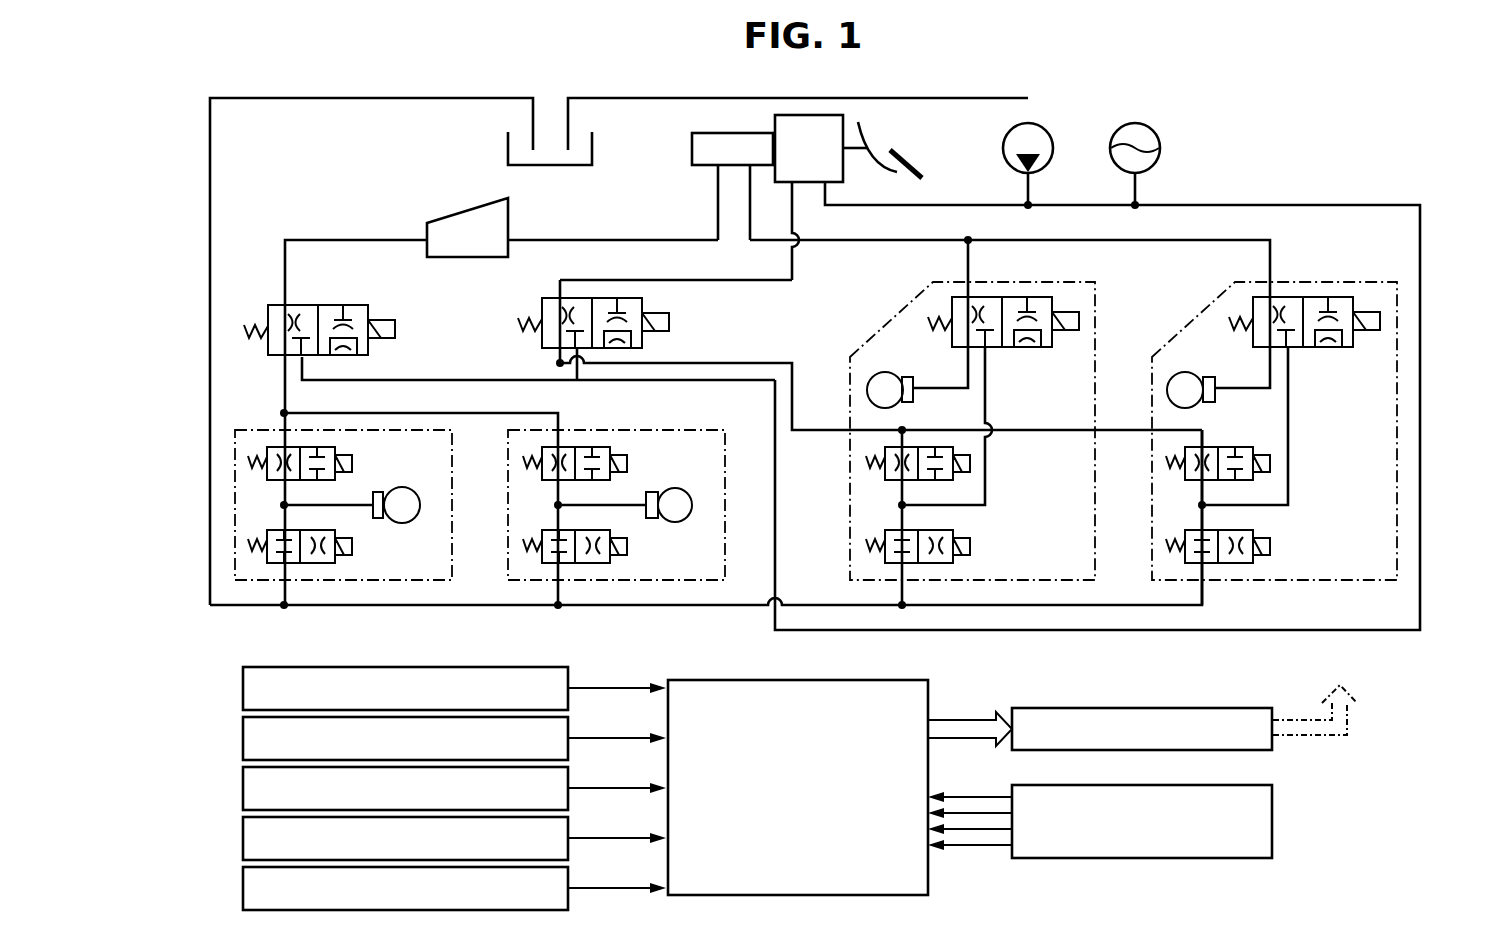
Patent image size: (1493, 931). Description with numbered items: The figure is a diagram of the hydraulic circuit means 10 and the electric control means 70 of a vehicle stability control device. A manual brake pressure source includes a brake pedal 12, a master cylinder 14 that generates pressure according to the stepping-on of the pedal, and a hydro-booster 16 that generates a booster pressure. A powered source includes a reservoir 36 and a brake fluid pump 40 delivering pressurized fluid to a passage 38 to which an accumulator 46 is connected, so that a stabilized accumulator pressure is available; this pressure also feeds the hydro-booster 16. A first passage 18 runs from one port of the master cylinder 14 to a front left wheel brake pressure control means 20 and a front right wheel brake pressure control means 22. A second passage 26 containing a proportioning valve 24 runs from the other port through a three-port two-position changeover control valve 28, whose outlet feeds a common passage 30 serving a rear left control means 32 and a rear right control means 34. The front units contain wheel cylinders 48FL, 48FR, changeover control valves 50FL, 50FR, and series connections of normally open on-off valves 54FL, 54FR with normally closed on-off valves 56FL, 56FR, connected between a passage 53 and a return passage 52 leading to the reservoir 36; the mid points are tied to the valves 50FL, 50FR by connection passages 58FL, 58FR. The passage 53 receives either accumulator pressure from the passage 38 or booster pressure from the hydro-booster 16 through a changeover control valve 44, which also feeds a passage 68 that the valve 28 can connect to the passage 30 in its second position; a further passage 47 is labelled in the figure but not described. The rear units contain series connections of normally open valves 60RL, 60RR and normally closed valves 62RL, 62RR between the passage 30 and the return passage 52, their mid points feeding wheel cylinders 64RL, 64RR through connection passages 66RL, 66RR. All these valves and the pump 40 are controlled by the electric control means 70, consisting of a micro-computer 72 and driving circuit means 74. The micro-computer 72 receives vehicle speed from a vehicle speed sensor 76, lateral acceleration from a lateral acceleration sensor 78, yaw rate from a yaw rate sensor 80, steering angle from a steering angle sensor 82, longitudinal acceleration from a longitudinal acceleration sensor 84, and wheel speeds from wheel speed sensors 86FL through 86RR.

The hydraulic circuit means 10 is at (195, 160).
The brake pedal 12 is at (912, 158).
The master cylinder 14 is at (710, 137).
The hydro-booster 16 is at (809, 197).
The first passage 18 is at (825, 240).
The front left wheel brake pressure control means 20 is at (905, 315).
The front right wheel brake pressure control means 22 is at (1200, 318).
The proportioning valve 24 is at (430, 216).
The second passage 26 is at (312, 240).
The changeover type electromagnetic control valve 28 is at (302, 305).
The common passage 30 is at (288, 400).
The rear left wheel brake pressure control means 32 is at (253, 428).
The rear right wheel brake pressure control means 34 is at (588, 583).
The reservoir 36 is at (508, 150).
The passage 38 is at (1300, 205).
The brake fluid pump 40 is at (1052, 155).
The changeover type electronic control valve 44 is at (590, 298).
The accumulator 46 is at (1160, 148).
The conduit 47 is at (705, 282).
The wheel cylinder 48FL is at (895, 405).
The wheel cylinder 48FR is at (1195, 405).
The changeover type electromagnetic control valve 50FL is at (1010, 298).
The changeover type electromagnetic control valve 50FR is at (1285, 298).
The return passage 52 is at (815, 604).
The passage 53 is at (762, 363).
The normally open type electromagnetic on-off valve 54FL is at (945, 481).
The normally open type electromagnetic on-off valve 54FR is at (1245, 481).
The normally closed type electromagnetic on-off valve 56FL is at (940, 530).
The normally closed type electromagnetic on-off valve 56FR is at (1240, 530).
The connection passage 58FL is at (987, 378).
The connection passage 58FR is at (1290, 378).
The normally open type electromagnetic on-off valve 60RL is at (265, 480).
The normally open type electromagnetic on-off valve 60RR is at (575, 447).
The normally closed type electromagnetic on-off valve 62RL is at (277, 563).
The normally closed type electromagnetic on-off valve 62RR is at (552, 563).
The wheel cylinder 64RL is at (402, 523).
The wheel cylinder 64RR is at (675, 522).
The connection passage 66RL is at (357, 500).
The connection passage 66RR is at (633, 502).
The passage 68 is at (433, 380).
The electric control means 70 is at (1068, 787).
The micro-computer 72 is at (798, 787).
The driving circuit means 74 is at (1212, 750).
The vehicle speed sensor 76 is at (243, 688).
The lateral acceleration sensor 78 is at (243, 738).
The yaw rate sensor 80 is at (243, 788).
The steering angle sensor 82 is at (243, 838).
The longitudinal acceleration sensor 84 is at (243, 888).
The wheel speed sensor 86FL is at (1196, 821).
The wheel speed sensor 86RR is at (1273, 818).